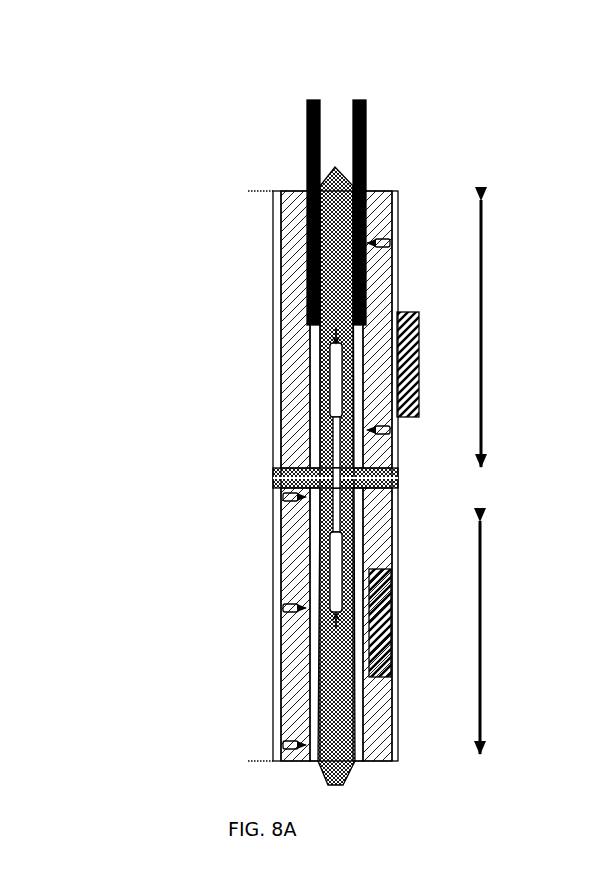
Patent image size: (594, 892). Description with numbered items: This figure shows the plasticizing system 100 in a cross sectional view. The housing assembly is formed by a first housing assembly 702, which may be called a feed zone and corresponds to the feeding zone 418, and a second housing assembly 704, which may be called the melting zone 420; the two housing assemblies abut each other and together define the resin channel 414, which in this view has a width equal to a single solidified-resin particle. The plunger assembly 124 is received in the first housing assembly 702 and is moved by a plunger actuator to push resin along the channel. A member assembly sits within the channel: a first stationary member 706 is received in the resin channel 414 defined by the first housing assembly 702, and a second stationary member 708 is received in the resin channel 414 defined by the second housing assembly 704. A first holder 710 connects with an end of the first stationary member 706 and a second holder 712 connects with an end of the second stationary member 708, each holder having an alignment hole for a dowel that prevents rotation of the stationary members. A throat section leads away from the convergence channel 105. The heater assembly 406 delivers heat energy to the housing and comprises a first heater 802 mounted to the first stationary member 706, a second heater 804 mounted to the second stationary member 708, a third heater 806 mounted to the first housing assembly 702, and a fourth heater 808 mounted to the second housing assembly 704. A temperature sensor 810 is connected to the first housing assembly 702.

The plasticizing system 100 is at (108, 70).
The plunger assembly 124 is at (307, 122).
The first stationary member 706 is at (307, 175).
The first housing assembly 702 is at (293, 270).
The resin channel 414 is at (312, 345).
The first heater 802 is at (330, 393).
The first holder 710 is at (275, 470).
The second holder 712 is at (283, 497).
The convergence channel 105 is at (315, 552).
The second heater 804 is at (335, 578).
The second housing assembly 704 is at (293, 672).
The second stationary member 708 is at (335, 727).
The temperature sensor 810 is at (392, 243).
The third heater 806 is at (405, 312).
The fourth heater 808 is at (385, 680).
The feeding zone 418 is at (483, 268).
The melting zone 420 is at (482, 605).
The heater assembly 406 is at (130, 641).